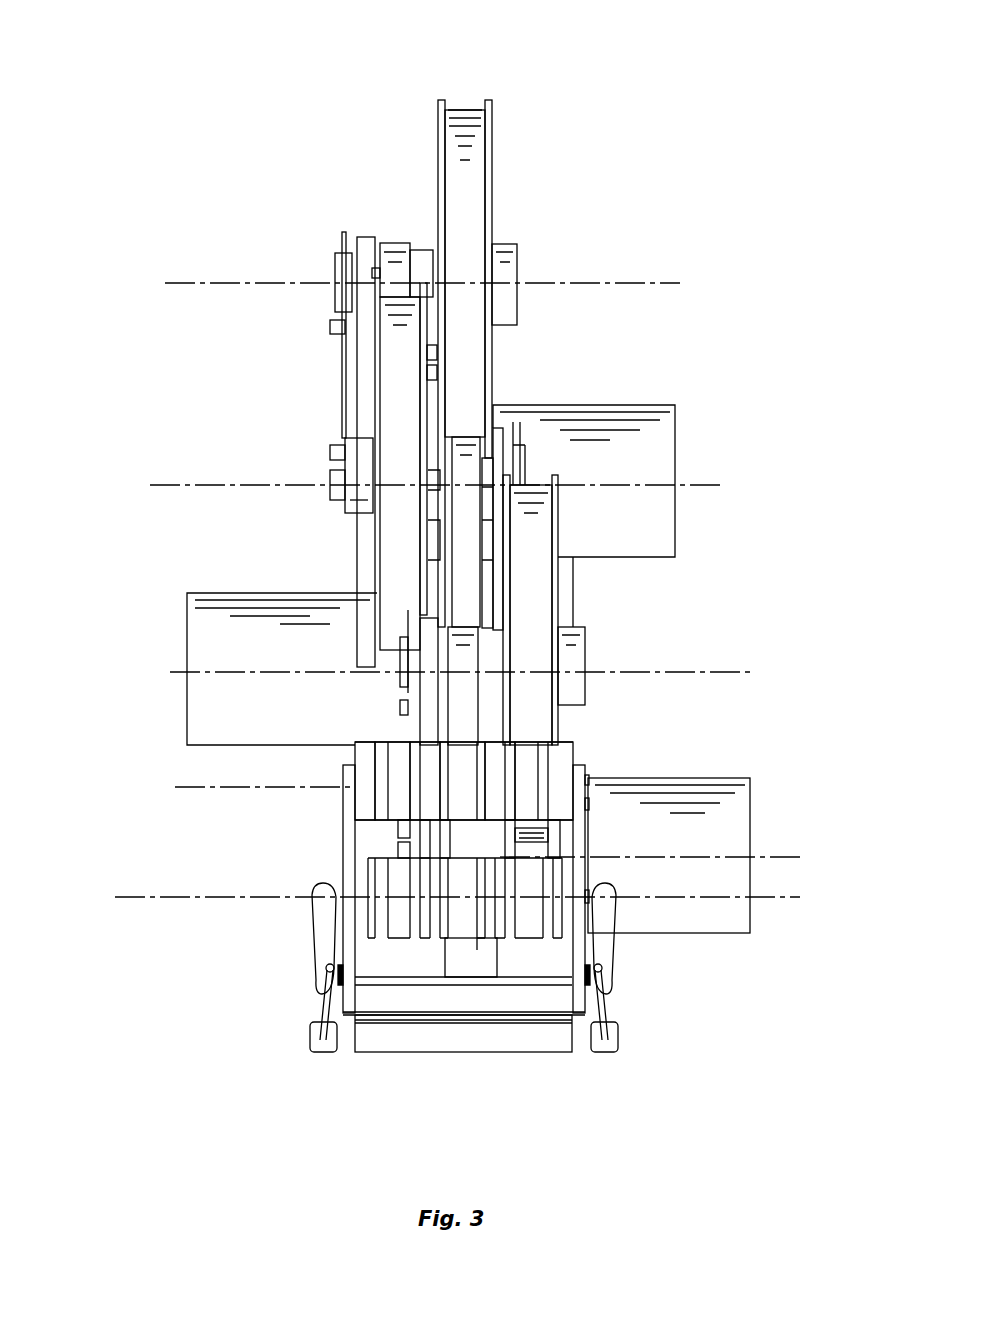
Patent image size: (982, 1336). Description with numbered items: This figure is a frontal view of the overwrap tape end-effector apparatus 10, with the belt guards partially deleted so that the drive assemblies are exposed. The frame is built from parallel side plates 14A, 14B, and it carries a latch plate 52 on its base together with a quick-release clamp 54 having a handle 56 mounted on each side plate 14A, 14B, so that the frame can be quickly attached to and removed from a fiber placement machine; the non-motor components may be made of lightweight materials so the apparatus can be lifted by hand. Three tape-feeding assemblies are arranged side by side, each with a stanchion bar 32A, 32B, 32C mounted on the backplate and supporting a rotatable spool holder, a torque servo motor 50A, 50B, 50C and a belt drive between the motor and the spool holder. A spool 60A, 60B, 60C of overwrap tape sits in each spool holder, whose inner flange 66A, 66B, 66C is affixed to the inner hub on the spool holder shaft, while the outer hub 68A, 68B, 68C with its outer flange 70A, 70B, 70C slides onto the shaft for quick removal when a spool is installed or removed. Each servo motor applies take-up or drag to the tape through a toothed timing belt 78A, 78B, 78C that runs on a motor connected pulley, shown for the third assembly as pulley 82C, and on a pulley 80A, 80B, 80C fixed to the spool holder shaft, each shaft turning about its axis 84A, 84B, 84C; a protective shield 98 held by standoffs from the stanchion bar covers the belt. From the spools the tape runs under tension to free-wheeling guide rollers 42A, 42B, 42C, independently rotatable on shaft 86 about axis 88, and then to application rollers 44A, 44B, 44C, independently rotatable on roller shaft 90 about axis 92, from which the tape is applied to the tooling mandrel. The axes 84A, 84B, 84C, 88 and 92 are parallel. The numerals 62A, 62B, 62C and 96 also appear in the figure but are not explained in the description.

The end-effector apparatus 10 is at (748, 132).
The side plate 14A is at (340, 868).
The side plate 14B is at (575, 823).
The stanchion bar 32A is at (465, 530).
The stanchion bar 32B is at (400, 250).
The stanchion bar 32C is at (463, 655).
The guide roller 42A is at (397, 790).
The guide roller 42B is at (458, 777).
The guide roller 42C is at (525, 782).
The application roller 44A is at (398, 925).
The application roller 44B is at (460, 925).
The application roller 44C is at (525, 925).
The servo motor 50A is at (282, 669).
The servo motor 50B is at (584, 481).
The servo motor 50C is at (669, 855).
The latch plate 52 is at (552, 1040).
The quick-release clamp 54 is at (305, 1030).
The handle 56 is at (320, 912).
The spool 60A is at (395, 410).
The spool 60B is at (472, 152).
The spool 60C is at (527, 575).
The arm top end 62A is at (397, 290).
The arm top end 62B is at (457, 108).
The arm top end 62C is at (540, 480).
The inner flange 66A is at (425, 535).
The inner flange 66B is at (441, 125).
The inner flange 66C is at (508, 600).
The outer hub 68A is at (360, 466).
The outer hub 68B is at (505, 270).
The outer hub 68C is at (575, 690).
The outer flange 70A is at (368, 355).
The outer flange 70B is at (490, 182).
The outer flange 70C is at (555, 700).
The toothed timing belt 78A is at (523, 502).
The toothed timing belt 78B is at (345, 270).
The toothed timing belt 78C is at (428, 640).
The pulley 80A is at (500, 430).
The pulley 80B is at (345, 265).
The pulley 80C is at (408, 685).
The motor connected pulley 82C is at (400, 852).
The axis 84A is at (178, 485).
The axis 84B is at (190, 283).
The axis 84C is at (172, 672).
The shaft 86 is at (590, 779).
The axis 88 is at (178, 787).
The roller shaft 90 is at (360, 908).
The axis 92 is at (122, 897).
The axis 96 is at (778, 855).
The protective shield 98 is at (343, 372).